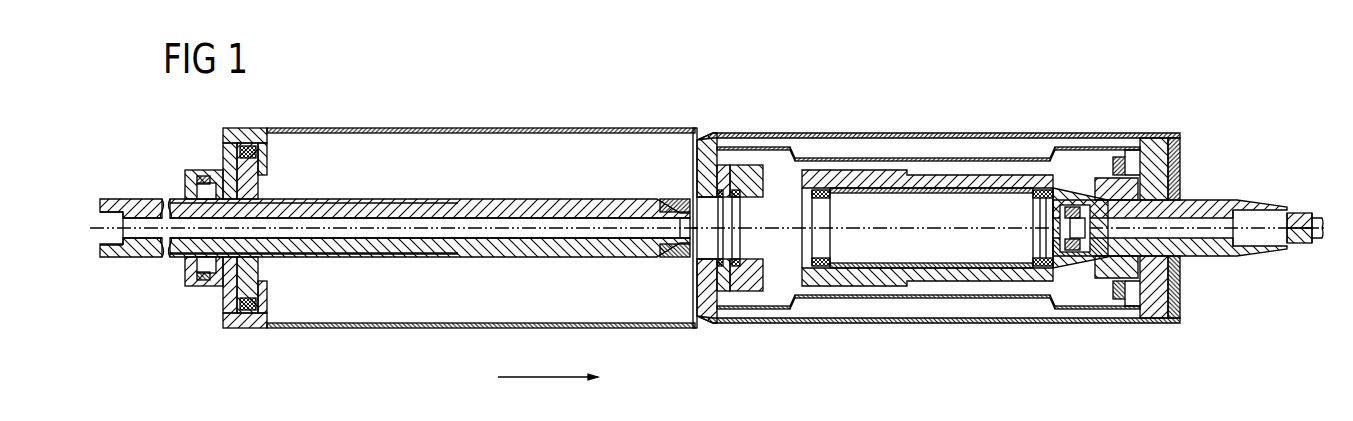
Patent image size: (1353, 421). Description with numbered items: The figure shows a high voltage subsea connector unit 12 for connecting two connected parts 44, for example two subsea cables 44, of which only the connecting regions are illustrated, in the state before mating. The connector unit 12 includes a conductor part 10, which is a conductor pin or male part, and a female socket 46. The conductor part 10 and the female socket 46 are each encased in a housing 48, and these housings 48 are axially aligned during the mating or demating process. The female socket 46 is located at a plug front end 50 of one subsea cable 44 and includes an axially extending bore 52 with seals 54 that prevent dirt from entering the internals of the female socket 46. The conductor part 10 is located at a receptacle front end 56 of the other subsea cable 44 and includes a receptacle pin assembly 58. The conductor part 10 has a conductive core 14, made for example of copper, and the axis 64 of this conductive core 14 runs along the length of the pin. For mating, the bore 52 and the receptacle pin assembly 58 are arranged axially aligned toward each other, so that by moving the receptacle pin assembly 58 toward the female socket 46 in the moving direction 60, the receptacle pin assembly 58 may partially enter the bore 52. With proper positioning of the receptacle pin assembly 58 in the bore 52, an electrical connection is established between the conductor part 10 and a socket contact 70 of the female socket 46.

The conductor part 10 is at (597, 262).
The subsea connector unit 12 is at (980, 117).
The conductive core 14 is at (562, 225).
The connected parts 44 is at (115, 212).
The female socket 46 is at (935, 134).
The housing 48 is at (501, 128).
The plug front end 50 is at (720, 118).
The bore 52 is at (948, 252).
The seals 54 is at (732, 262).
The receptacle front end 56 is at (433, 117).
The receptacle pin assembly 58 is at (452, 262).
The moving direction 60 is at (535, 378).
The axis 64 is at (150, 245).
The socket contact 70 is at (1080, 265).